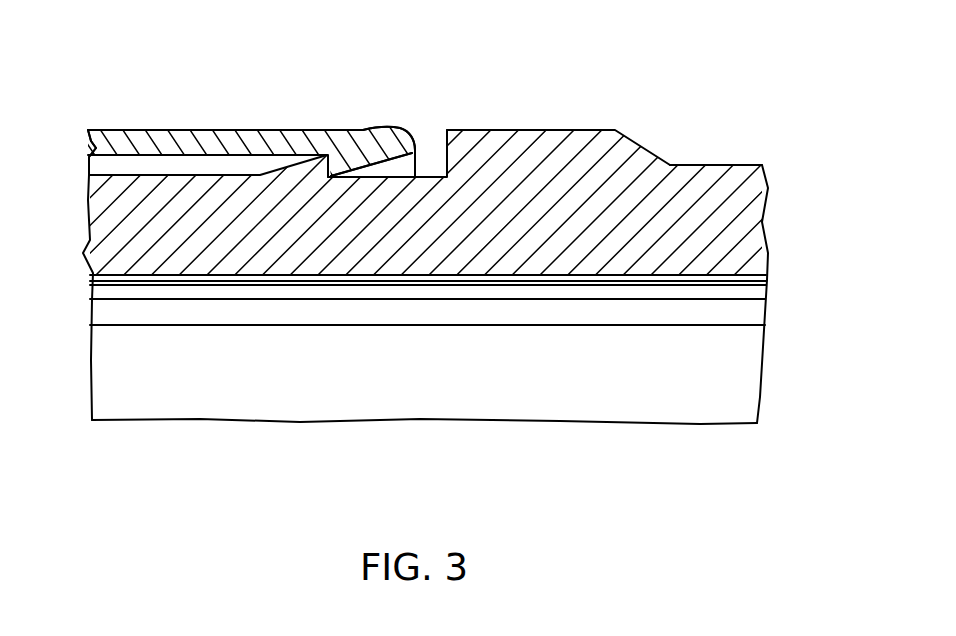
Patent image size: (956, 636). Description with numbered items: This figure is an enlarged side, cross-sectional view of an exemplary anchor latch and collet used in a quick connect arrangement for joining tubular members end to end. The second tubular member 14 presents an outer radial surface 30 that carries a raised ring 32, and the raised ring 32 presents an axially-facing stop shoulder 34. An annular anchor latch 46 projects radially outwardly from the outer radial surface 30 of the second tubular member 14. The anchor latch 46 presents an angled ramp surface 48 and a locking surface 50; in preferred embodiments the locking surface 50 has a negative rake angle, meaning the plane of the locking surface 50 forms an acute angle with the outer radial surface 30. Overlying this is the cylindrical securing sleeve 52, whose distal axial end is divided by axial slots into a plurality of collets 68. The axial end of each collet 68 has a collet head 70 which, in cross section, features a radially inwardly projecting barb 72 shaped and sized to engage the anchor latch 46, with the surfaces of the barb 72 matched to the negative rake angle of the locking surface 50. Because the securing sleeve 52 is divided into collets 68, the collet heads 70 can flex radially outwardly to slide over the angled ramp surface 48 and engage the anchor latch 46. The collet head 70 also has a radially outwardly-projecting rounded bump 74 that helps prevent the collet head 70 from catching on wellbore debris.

The second tubular member 14 is at (752, 150).
The outer radial surface 30 is at (710, 165).
The raised ring 32 is at (552, 130).
The stop shoulder 34 is at (445, 154).
The anchor latch 46 is at (297, 154).
The angled ramp surface 48 is at (327, 156).
The locking surface 50 is at (345, 153).
The securing sleeve 52 is at (104, 129).
The collet 68 is at (169, 130).
The collet head 70 is at (407, 131).
The barb 72 is at (327, 158).
The rounded bump 74 is at (385, 126).